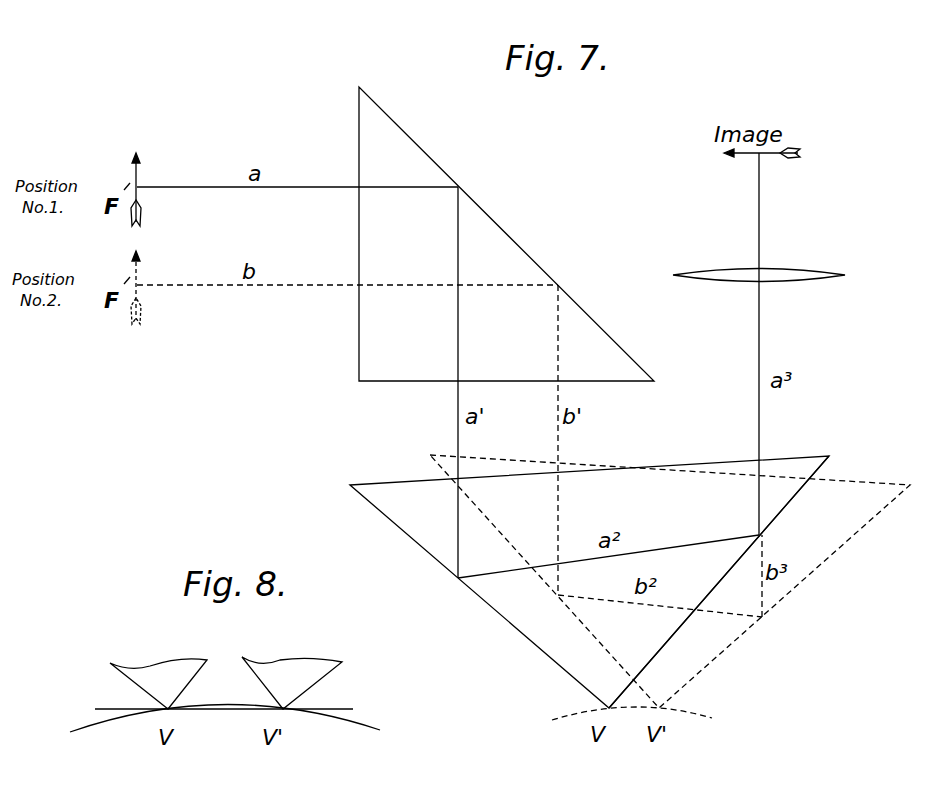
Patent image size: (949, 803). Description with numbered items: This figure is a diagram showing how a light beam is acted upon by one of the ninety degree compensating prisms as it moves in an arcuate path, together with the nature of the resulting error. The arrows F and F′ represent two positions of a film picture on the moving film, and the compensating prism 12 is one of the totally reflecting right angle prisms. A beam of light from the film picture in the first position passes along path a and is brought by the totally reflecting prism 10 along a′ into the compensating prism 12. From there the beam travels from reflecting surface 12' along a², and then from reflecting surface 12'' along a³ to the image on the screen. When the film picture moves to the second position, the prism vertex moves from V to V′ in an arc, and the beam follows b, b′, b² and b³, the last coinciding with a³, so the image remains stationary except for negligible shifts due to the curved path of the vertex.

In FIG. 7, the totally reflecting prism 10 is at (518, 267).
In FIG. 7, the compensating prism 12 is at (589, 569).
In FIG. 8, the compensating prism 12 is at (226, 669).
In FIG. 7, the reflecting surface 12' is at (670, 581).
In FIG. 7, the reflecting surface 12'' is at (719, 582).